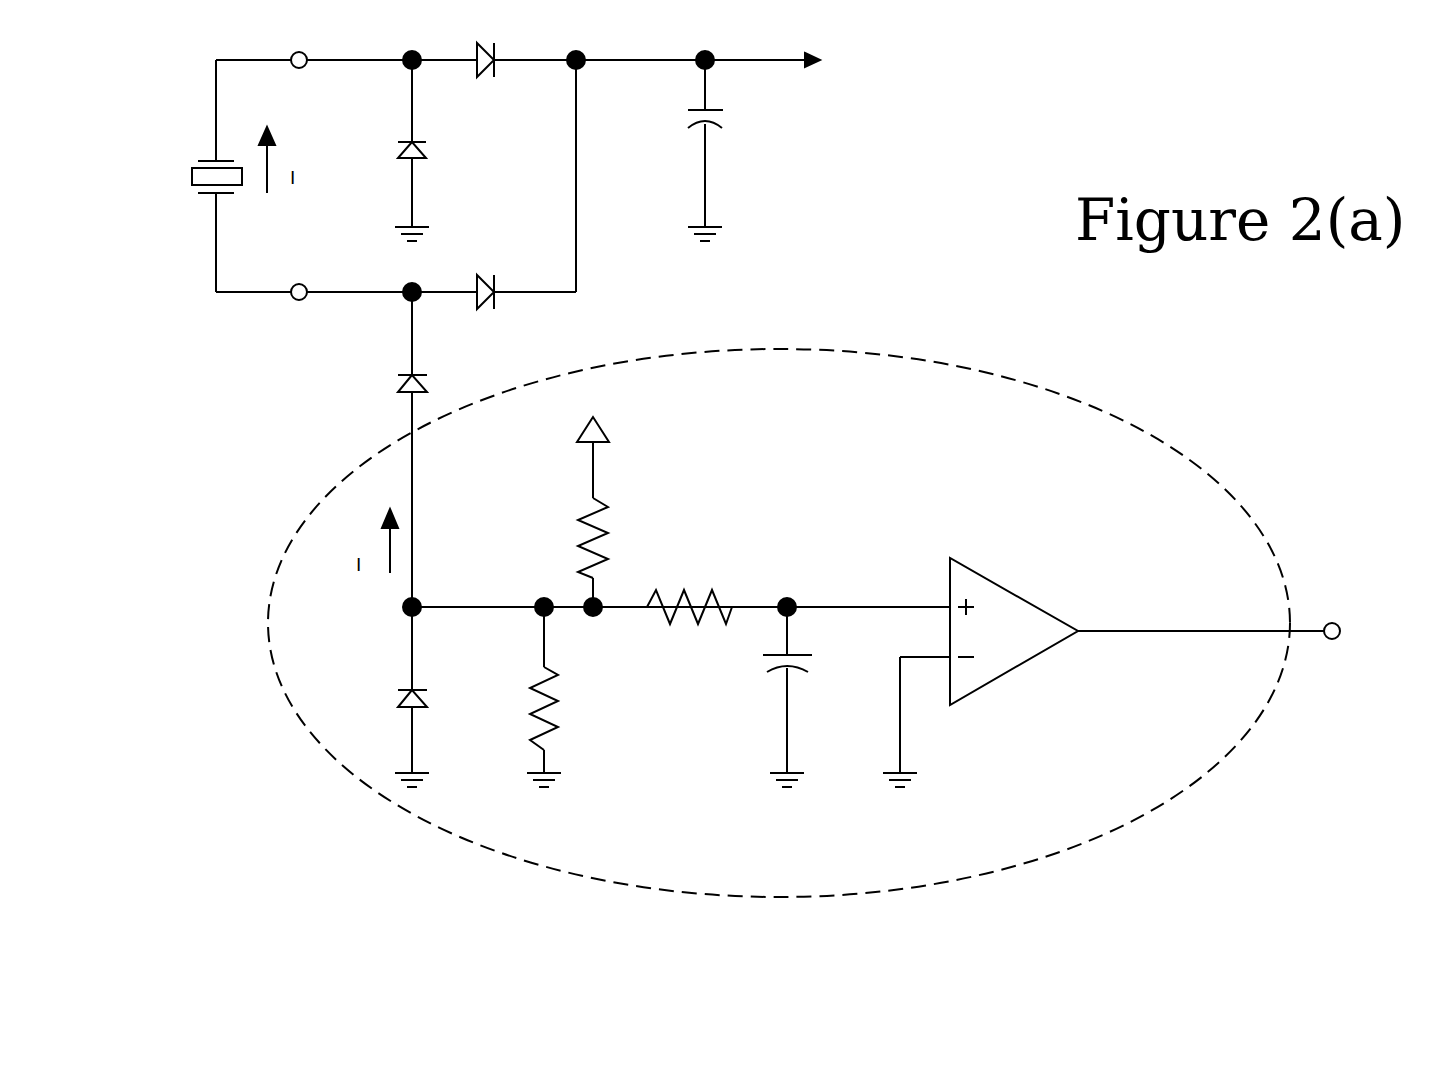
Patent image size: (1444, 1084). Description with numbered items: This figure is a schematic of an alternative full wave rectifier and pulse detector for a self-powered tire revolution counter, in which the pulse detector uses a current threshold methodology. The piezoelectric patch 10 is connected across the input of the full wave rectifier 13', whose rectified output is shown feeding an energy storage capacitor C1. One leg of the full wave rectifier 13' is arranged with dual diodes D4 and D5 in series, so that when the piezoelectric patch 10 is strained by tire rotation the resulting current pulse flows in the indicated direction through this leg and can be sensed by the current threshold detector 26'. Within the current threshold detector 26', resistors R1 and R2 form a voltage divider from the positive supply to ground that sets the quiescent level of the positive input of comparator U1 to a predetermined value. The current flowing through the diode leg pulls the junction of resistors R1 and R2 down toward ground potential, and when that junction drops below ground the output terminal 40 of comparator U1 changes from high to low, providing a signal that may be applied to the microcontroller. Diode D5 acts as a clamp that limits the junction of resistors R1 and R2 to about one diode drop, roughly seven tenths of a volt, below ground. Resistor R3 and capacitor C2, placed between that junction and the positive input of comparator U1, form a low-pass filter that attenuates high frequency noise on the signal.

The piezoelectric patch 10 is at (192, 186).
The full wave rectifier 13' is at (364, 255).
The diode D4 is at (407, 395).
The diode D5 is at (398, 707).
The resistor R1 is at (580, 572).
The resistor R2 is at (562, 727).
The resistor R3 is at (705, 592).
The energy storage capacitor C1 is at (726, 112).
The capacitor C2 is at (777, 657).
The comparator U1 is at (982, 573).
The current threshold detector 26' is at (799, 618).
The output terminal 40 is at (1340, 626).